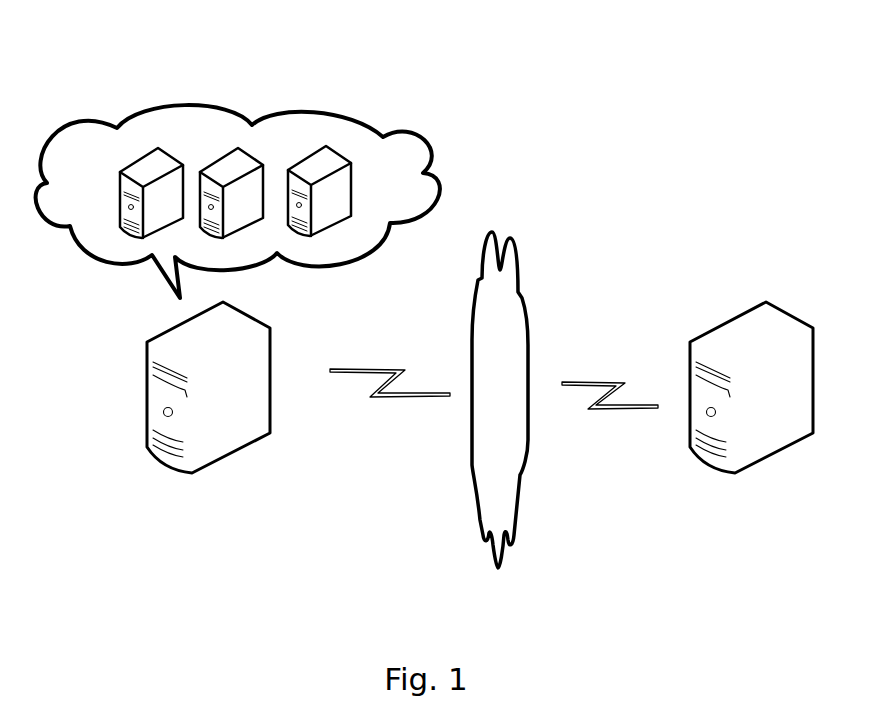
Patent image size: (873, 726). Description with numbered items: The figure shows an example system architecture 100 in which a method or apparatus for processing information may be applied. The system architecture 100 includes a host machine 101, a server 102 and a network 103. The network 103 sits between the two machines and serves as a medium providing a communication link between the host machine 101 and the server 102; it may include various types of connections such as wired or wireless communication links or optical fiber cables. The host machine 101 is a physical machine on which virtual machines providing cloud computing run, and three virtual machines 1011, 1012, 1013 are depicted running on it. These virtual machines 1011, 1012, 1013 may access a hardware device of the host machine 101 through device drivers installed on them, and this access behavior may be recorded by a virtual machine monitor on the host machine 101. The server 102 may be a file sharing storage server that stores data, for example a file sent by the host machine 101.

The system architecture 100 is at (805, 35).
The host machine 101 is at (208, 404).
The virtual machine 1011 is at (151, 186).
The virtual machine 1012 is at (231, 186).
The virtual machine 1013 is at (319, 184).
The server 102 is at (751, 406).
The network 103 is at (500, 400).